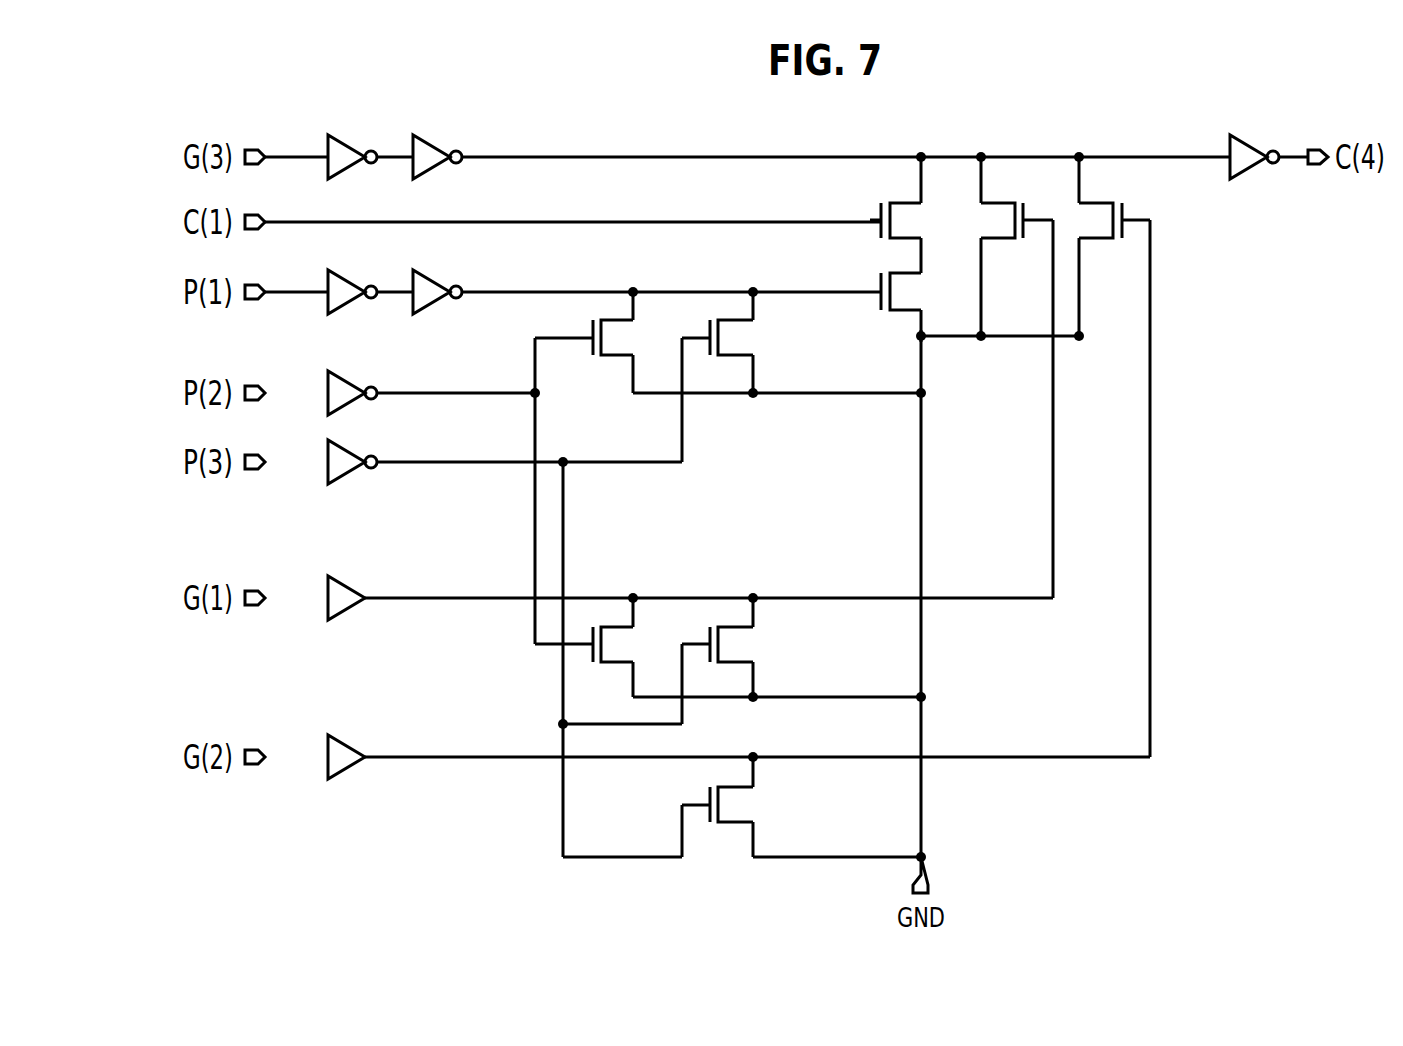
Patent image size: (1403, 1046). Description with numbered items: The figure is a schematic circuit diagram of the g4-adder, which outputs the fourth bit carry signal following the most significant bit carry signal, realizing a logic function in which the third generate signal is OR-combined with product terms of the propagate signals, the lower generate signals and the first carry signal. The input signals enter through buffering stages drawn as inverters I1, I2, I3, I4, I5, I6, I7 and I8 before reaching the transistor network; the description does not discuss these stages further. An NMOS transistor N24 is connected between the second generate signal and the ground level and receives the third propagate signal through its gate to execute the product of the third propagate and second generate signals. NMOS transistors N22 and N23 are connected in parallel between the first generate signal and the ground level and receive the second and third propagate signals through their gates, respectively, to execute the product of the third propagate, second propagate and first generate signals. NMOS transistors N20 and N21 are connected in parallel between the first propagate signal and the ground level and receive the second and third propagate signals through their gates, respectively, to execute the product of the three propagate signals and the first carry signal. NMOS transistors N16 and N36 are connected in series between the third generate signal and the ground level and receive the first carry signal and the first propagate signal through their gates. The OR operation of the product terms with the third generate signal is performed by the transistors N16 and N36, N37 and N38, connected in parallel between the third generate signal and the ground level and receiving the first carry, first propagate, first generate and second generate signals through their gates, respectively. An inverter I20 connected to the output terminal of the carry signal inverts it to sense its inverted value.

The inverter I1 is at (341, 146).
The inverter I2 is at (426, 146).
The inverter I3 is at (341, 281).
The inverter I4 is at (426, 281).
The inverter I5 is at (341, 382).
The inverter I6 is at (341, 451).
The buffer I7 is at (341, 587).
The buffer I8 is at (341, 746).
The inverter I20 is at (1243, 146).
The NMOS transistor N16 is at (891, 206).
The NMOS transistor N20 is at (598, 337).
The NMOS transistor N21 is at (730, 337).
The NMOS transistor N22 is at (597, 644).
The NMOS transistor N23 is at (730, 644).
The NMOS transistor N24 is at (730, 804).
The NMOS transistor N36 is at (891, 328).
The NMOS transistor N37 is at (1017, 238).
The NMOS transistor N38 is at (1114, 238).